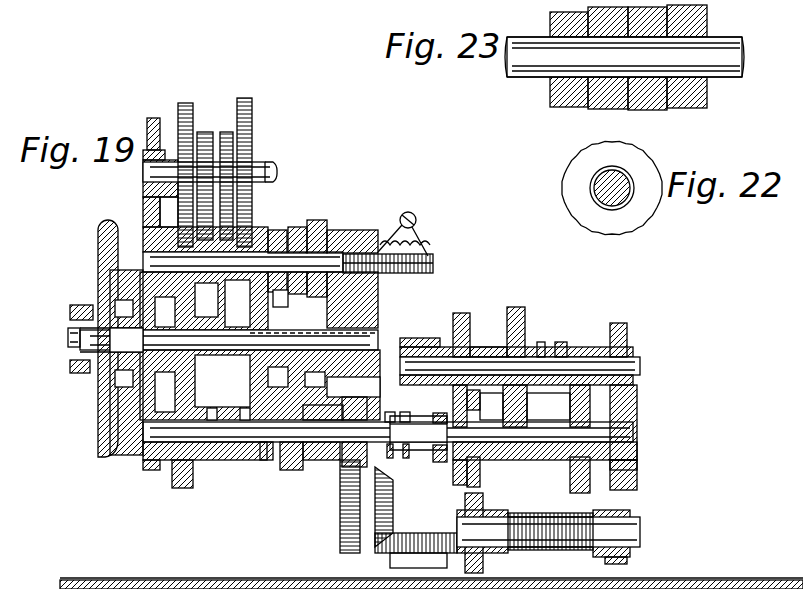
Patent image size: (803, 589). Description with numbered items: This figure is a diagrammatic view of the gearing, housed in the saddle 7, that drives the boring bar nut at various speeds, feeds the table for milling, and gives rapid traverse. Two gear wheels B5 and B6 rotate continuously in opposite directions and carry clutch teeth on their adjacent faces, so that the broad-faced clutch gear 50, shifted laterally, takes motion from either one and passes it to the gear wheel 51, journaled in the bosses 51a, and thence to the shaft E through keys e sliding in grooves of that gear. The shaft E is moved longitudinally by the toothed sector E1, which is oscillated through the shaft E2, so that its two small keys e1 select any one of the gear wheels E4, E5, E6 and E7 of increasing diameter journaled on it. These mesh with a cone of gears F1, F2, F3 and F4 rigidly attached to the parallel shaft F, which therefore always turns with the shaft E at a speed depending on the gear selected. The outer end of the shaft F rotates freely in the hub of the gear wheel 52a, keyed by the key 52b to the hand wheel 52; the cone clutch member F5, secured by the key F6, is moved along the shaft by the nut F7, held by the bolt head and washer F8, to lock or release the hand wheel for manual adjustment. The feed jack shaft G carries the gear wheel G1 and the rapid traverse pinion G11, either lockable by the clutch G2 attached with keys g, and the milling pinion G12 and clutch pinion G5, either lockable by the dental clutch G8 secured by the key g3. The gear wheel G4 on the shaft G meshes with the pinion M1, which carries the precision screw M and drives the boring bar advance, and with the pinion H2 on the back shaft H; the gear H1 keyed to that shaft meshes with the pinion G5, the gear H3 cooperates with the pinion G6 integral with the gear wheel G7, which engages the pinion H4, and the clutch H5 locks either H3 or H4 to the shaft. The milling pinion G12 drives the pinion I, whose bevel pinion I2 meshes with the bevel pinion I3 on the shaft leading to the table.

In FIG. 19, the gear wheel 51 is at (190, 208).
In FIG. 19, the bosses 51a is at (165, 225).
In FIG. 19, the keys e is at (243, 217).
In FIG. 19, the small keys e1 is at (260, 255).
In FIG. 23, the small keys e1 is at (590, 44).
In FIG. 19, the gear wheel B6 is at (185, 110).
In FIG. 19, the gear wheel B5 is at (245, 104).
In FIG. 19, the broad-faced clutch gear 50 is at (226, 142).
In FIG. 19, the shaft E is at (445, 263).
In FIG. 19, the toothed sector E1 is at (410, 235).
In FIG. 19, the shaft E2 is at (416, 216).
In FIG. 19, the gear wheel E4 is at (264, 240).
In FIG. 23, the gear wheel E4 is at (578, 152).
In FIG. 19, the gear wheel E5 is at (278, 232).
In FIG. 23, the gear wheel E5 is at (608, 71).
In FIG. 19, the gear wheel E6 is at (296, 230).
In FIG. 23, the gear wheel E6 is at (647, 71).
In FIG. 19, the gear wheel E7 is at (315, 220).
In FIG. 23, the gear wheel E7 is at (687, 69).
In FIG. 19, the shaft F is at (229, 340).
In FIG. 19, the cone gear F1 is at (260, 385).
In FIG. 19, the cone gear F2 is at (305, 380).
In FIG. 19, the cone gear F3 is at (350, 380).
In FIG. 19, the cone gear F4 is at (320, 318).
In FIG. 19, the cone clutch member F5 is at (108, 385).
In FIG. 19, the key F6 is at (78, 366).
In FIG. 19, the nut F7 is at (80, 306).
In FIG. 19, the bolt head and washer F8 is at (68, 338).
In FIG. 19, the hand wheel 52 is at (100, 228).
In FIG. 19, the gear wheel 52a is at (190, 358).
In FIG. 19, the key 52b is at (123, 338).
In FIG. 19, the feed jack shaft G is at (390, 446).
In FIG. 19, the keys g is at (258, 428).
In FIG. 19, the key g3 is at (398, 445).
In FIG. 19, the gear wheel G1 is at (185, 488).
In FIG. 19, the clutch G2 is at (240, 462).
In FIG. 19, the rapid traverse pinion G11 is at (290, 470).
In FIG. 19, the milling pinion G12 is at (352, 408).
In FIG. 19, the dental clutch G8 is at (440, 416).
In FIG. 19, the gear wheel G4 is at (480, 470).
In FIG. 19, the clutch pinion G5 is at (458, 465).
In FIG. 19, the pinion G6 is at (580, 462).
In FIG. 19, the gear wheel G7 is at (582, 493).
In FIG. 19, the saddle 7 is at (150, 470).
In FIG. 19, the pinion I is at (345, 520).
In FIG. 19, the bevel pinion I2 is at (390, 498).
In FIG. 19, the bevel pinion I3 is at (410, 540).
In FIG. 19, the back shaft H is at (625, 366).
In FIG. 19, the gear H1 is at (460, 318).
In FIG. 19, the pinion H2 is at (488, 348).
In FIG. 19, the gear H3 is at (516, 312).
In FIG. 19, the pinion H4 is at (575, 348).
In FIG. 19, the clutch H5 is at (541, 342).
In FIG. 19, the precision screw M is at (552, 550).
In FIG. 19, the pinion M1 is at (480, 560).